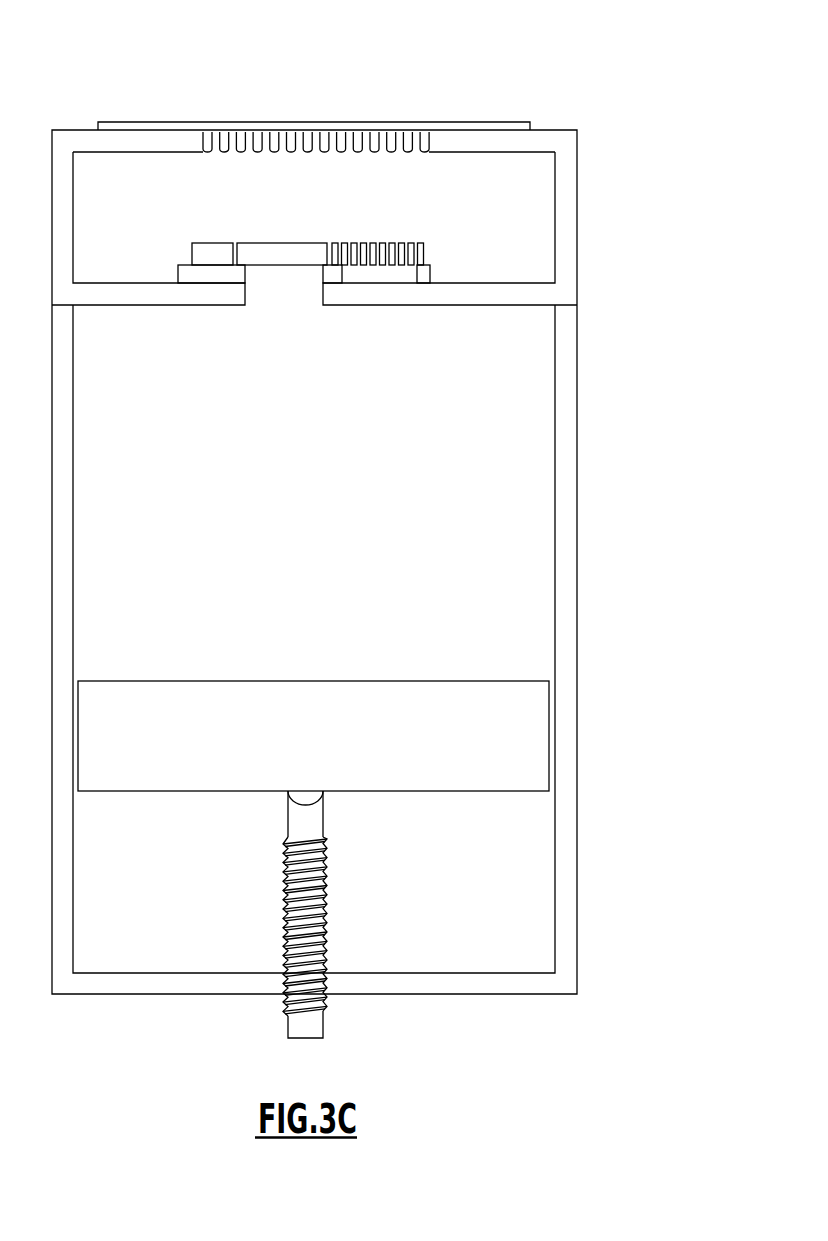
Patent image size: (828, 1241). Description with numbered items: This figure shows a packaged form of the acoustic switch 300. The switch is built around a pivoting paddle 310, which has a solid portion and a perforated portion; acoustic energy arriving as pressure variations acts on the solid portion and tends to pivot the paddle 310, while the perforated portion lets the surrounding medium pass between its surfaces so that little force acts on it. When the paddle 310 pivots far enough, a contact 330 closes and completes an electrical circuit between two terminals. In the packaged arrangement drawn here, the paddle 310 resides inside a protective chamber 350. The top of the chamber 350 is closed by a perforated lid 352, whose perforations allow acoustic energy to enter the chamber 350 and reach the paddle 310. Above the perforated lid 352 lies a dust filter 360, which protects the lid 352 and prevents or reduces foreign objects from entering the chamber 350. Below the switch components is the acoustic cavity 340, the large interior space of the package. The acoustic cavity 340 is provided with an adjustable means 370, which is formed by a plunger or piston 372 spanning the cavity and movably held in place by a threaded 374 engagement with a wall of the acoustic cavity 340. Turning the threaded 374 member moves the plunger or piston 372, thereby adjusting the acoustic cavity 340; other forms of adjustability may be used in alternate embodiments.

The acoustic switch 300 is at (655, 39).
The pivoting paddle 310 is at (292, 233).
The contact 330 is at (243, 243).
The acoustic cavity 340 is at (427, 486).
The protective chamber 350 is at (577, 217).
The perforated lid 352 is at (457, 152).
The dust filter 360 is at (143, 122).
The adjustable means 370 is at (607, 675).
The plunger or piston 372 is at (456, 703).
The threaded engagement 374 is at (323, 955).